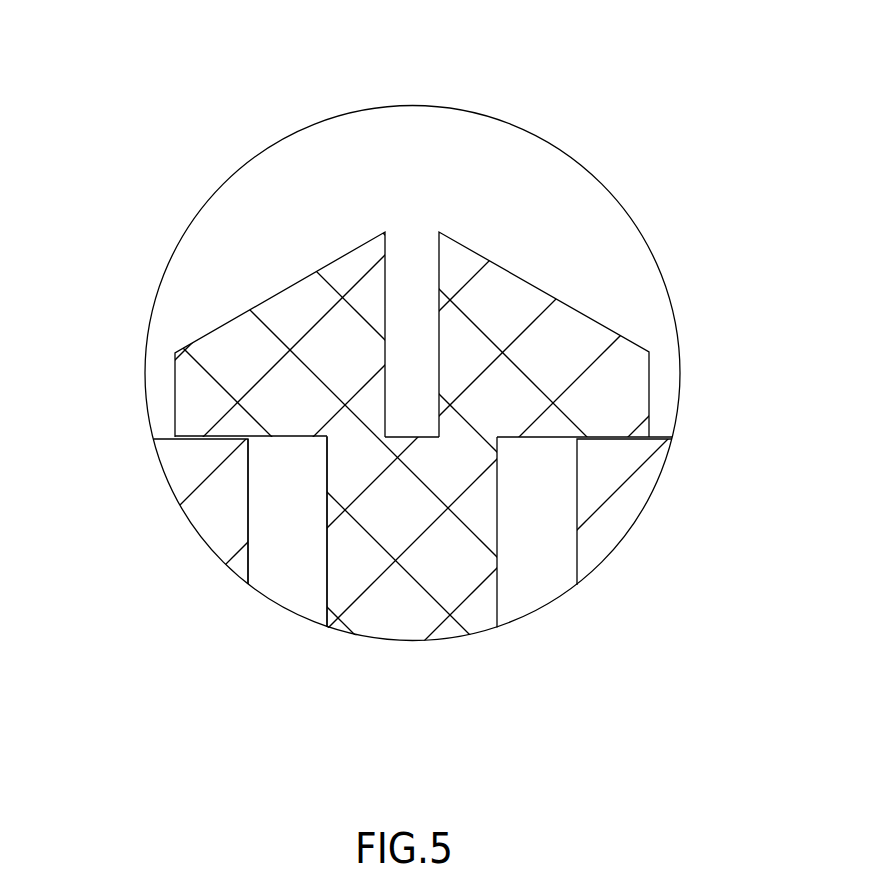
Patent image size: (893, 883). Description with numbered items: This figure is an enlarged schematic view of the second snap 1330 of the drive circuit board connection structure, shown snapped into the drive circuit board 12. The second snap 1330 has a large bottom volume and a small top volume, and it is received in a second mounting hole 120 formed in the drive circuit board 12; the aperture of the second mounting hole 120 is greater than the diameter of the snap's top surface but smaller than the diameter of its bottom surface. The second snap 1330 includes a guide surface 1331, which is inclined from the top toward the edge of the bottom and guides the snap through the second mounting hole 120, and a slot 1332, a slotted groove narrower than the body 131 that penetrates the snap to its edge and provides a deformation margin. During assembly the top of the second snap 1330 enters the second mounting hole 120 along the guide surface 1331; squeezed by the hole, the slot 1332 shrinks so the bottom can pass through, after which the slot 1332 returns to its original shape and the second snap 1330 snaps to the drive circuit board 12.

The drive circuit board 12 is at (595, 477).
The second mounting hole 120 is at (284, 575).
The body 131 is at (380, 545).
The second snap 1330 is at (343, 338).
The guide surface 1331 is at (553, 283).
The slot 1332 is at (412, 265).